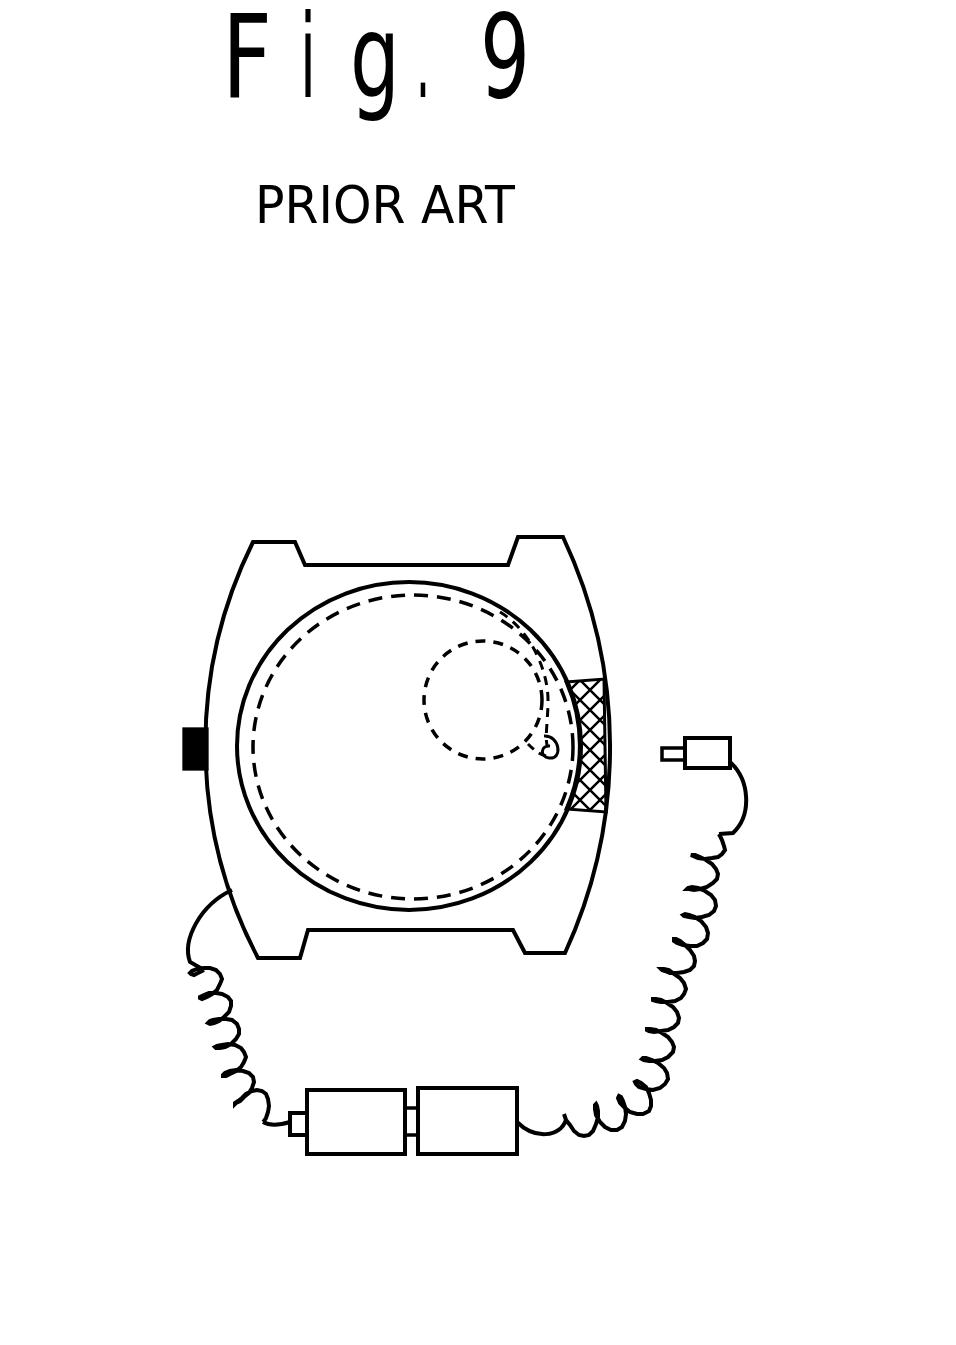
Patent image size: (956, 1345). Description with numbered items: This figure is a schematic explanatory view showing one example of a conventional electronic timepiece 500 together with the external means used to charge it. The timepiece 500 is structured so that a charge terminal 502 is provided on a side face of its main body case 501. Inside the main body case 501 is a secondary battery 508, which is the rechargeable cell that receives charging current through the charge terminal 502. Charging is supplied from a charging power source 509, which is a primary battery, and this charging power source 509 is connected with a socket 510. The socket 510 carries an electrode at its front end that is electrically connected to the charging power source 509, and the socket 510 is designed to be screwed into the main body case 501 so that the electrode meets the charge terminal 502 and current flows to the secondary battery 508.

The electronic timepiece 500 is at (158, 476).
The main body case 501 is at (553, 578).
The charge terminal 502 is at (608, 742).
The secondary battery 508 is at (440, 650).
The charging power source 509 is at (363, 1143).
The socket 510 is at (706, 738).